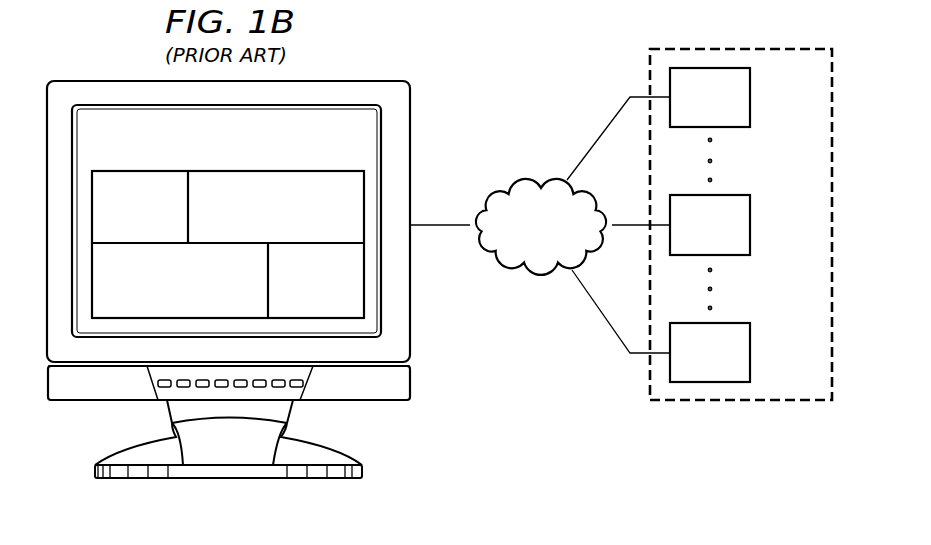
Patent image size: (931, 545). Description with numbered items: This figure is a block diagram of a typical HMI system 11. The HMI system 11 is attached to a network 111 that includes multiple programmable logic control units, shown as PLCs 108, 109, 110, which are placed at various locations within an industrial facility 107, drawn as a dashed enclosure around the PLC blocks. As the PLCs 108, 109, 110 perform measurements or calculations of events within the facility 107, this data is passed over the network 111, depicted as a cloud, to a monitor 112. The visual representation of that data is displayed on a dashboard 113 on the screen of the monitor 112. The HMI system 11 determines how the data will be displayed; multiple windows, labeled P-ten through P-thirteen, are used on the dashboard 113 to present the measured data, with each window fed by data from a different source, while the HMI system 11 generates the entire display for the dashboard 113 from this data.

The HMI system 11 is at (565, 58).
The industrial facility 107 is at (769, 402).
The programmable logic control unit 108 is at (750, 86).
The programmable logic control unit 109 is at (750, 213).
The programmable logic control unit 110 is at (750, 363).
The network 111 is at (540, 176).
The monitor 112 is at (119, 81).
The dashboard 113 is at (206, 170).